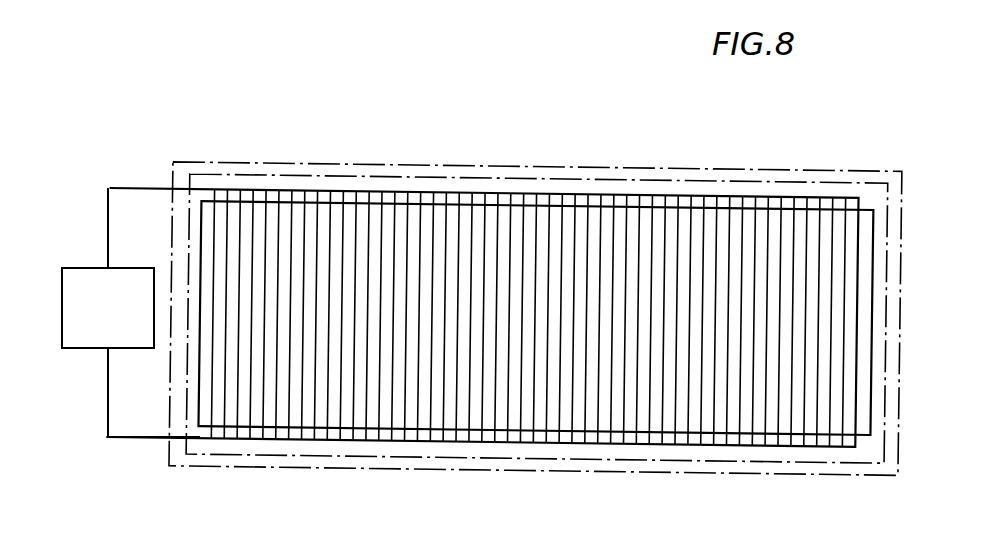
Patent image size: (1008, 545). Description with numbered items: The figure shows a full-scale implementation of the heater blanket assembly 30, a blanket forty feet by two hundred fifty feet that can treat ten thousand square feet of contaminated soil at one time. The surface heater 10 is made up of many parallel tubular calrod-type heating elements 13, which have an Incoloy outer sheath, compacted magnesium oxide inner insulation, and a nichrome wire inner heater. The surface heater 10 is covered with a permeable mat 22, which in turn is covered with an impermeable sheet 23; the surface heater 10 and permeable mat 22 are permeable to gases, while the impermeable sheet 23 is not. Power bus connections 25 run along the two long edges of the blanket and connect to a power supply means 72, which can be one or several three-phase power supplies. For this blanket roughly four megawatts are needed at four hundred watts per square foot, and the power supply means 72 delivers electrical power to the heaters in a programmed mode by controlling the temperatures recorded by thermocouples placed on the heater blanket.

The heater blanket assembly 30 is at (818, 150).
The impermeable sheet 23 is at (590, 166).
The permeable mat 22 is at (520, 176).
The surface heater 10 is at (450, 198).
The tubular heating elements 13 is at (380, 220).
The power bus connections 25 is at (137, 187).
The power supply means 72 is at (86, 349).